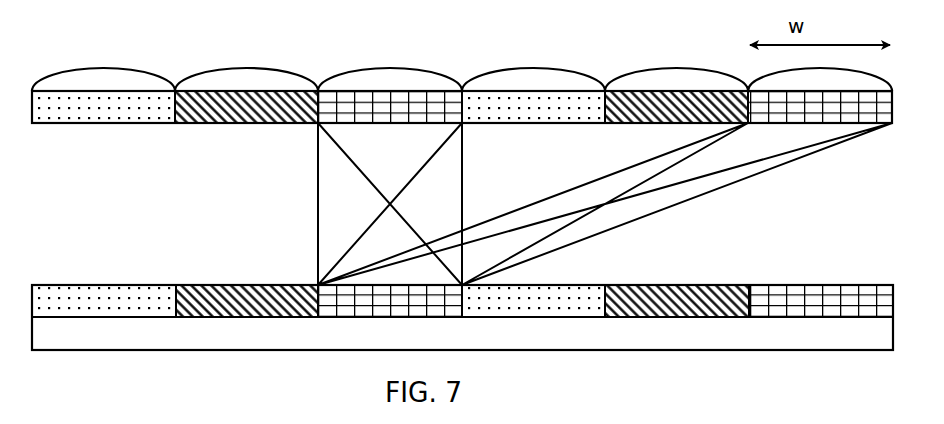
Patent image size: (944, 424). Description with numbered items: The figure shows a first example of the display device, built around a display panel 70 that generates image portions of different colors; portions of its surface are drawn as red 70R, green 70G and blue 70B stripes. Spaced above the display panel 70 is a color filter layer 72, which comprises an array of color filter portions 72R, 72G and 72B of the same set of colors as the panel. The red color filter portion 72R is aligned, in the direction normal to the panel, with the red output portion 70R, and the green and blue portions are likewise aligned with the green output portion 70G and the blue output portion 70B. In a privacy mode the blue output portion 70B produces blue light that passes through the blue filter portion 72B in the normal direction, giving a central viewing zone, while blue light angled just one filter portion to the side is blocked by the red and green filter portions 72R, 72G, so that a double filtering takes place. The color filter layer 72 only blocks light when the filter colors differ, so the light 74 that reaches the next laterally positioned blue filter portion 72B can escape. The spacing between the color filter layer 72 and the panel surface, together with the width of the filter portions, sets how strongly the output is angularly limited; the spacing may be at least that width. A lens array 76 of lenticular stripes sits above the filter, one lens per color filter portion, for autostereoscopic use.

The display panel 70 is at (62, 281).
The red output portion of the display panel 70R is at (152, 299).
The green output portion of the display panel 70G is at (240, 299).
The blue output portion of the display panel 70B is at (345, 298).
The color filter layer 72 is at (92, 145).
The red color filter portion 72R is at (137, 98).
The green color filter portion 72G is at (272, 101).
The blue color filter portion 72B is at (420, 105).
The light 74 is at (514, 212).
The lens array 76 is at (63, 68).